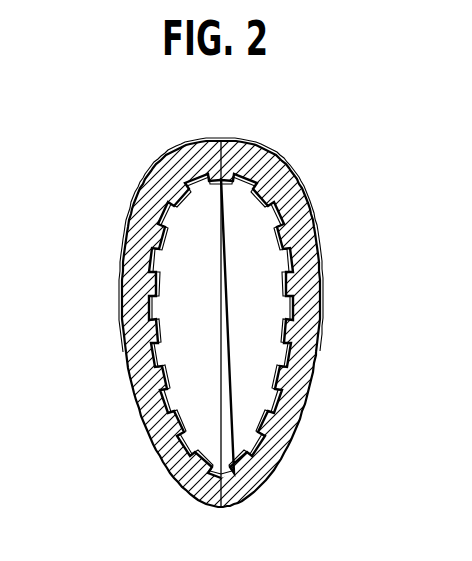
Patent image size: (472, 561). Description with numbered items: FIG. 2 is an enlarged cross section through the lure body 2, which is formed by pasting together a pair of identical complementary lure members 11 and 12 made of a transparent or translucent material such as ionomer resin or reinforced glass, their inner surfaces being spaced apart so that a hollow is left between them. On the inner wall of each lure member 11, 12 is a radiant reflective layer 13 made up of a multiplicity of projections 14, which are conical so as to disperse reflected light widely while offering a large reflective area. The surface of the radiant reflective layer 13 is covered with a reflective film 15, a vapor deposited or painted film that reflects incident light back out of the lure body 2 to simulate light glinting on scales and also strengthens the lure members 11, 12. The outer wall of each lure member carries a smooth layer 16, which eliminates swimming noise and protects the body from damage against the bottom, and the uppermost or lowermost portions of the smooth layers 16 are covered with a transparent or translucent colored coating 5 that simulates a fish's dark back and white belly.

The lure body 2 is at (327, 117).
The colored coating 5 is at (170, 153).
The lure member 11 is at (323, 227).
The lure member 12 is at (125, 225).
The radiant reflective layer 13 is at (167, 353).
The projections 14 is at (188, 432).
The reflective film 15 is at (283, 375).
The smooth layer 16 is at (307, 372).